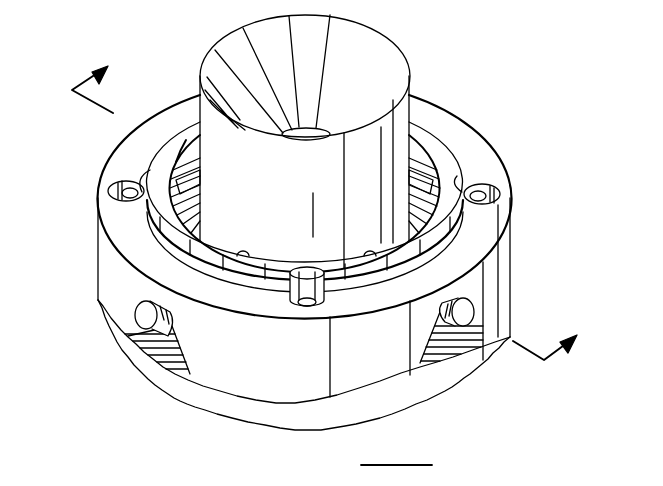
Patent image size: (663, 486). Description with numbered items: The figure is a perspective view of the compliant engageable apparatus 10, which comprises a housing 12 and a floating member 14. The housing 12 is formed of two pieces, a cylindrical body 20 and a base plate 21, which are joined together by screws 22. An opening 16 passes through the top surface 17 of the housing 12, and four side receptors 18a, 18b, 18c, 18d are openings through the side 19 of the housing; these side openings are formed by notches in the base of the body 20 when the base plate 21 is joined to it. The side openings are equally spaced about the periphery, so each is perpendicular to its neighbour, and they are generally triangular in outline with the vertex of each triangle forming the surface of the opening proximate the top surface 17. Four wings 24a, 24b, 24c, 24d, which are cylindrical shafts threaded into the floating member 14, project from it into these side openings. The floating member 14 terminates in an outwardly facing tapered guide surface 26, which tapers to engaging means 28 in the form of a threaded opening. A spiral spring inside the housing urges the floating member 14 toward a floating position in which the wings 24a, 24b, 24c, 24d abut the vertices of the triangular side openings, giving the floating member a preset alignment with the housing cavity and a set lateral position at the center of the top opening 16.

The compliant engageable apparatus 10 is at (522, 143).
The housing 12 is at (491, 280).
The floating member 14 is at (364, 147).
The opening 16 is at (193, 138).
The top surface 17 is at (474, 150).
The side receptor 18a is at (166, 343).
The side receptor 18b is at (447, 350).
The side receptor 18c is at (421, 208).
The side receptor 18d is at (188, 212).
The side 19 is at (243, 337).
The cylindrical body 20 is at (108, 262).
The base plate 21 is at (212, 397).
The screws 22 is at (109, 183).
The wing 24a is at (145, 318).
The wing 24b is at (470, 315).
The wing 24c is at (421, 173).
The wing 24d is at (193, 180).
The tapered guide surface 26 is at (390, 62).
The engaging means 28 is at (318, 127).